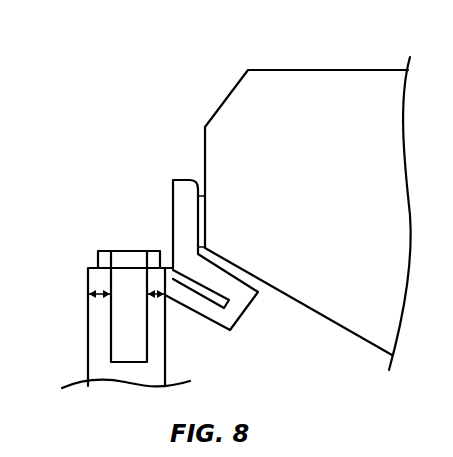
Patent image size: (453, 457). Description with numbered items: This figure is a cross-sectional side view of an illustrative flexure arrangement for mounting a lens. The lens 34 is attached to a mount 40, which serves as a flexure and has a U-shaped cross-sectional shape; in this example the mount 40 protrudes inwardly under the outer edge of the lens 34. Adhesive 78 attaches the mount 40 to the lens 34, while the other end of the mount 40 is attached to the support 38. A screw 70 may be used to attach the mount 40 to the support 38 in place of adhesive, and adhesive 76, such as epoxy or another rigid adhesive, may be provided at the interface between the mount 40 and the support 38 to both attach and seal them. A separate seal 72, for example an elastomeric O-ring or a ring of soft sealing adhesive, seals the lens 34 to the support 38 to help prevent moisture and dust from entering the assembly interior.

The lens 34 is at (330, 79).
The support 38 is at (88, 366).
The mount 40 is at (250, 306).
The screw 70 is at (130, 251).
The seal 72 is at (162, 297).
The adhesive 76 is at (102, 297).
The adhesive 78 is at (200, 195).